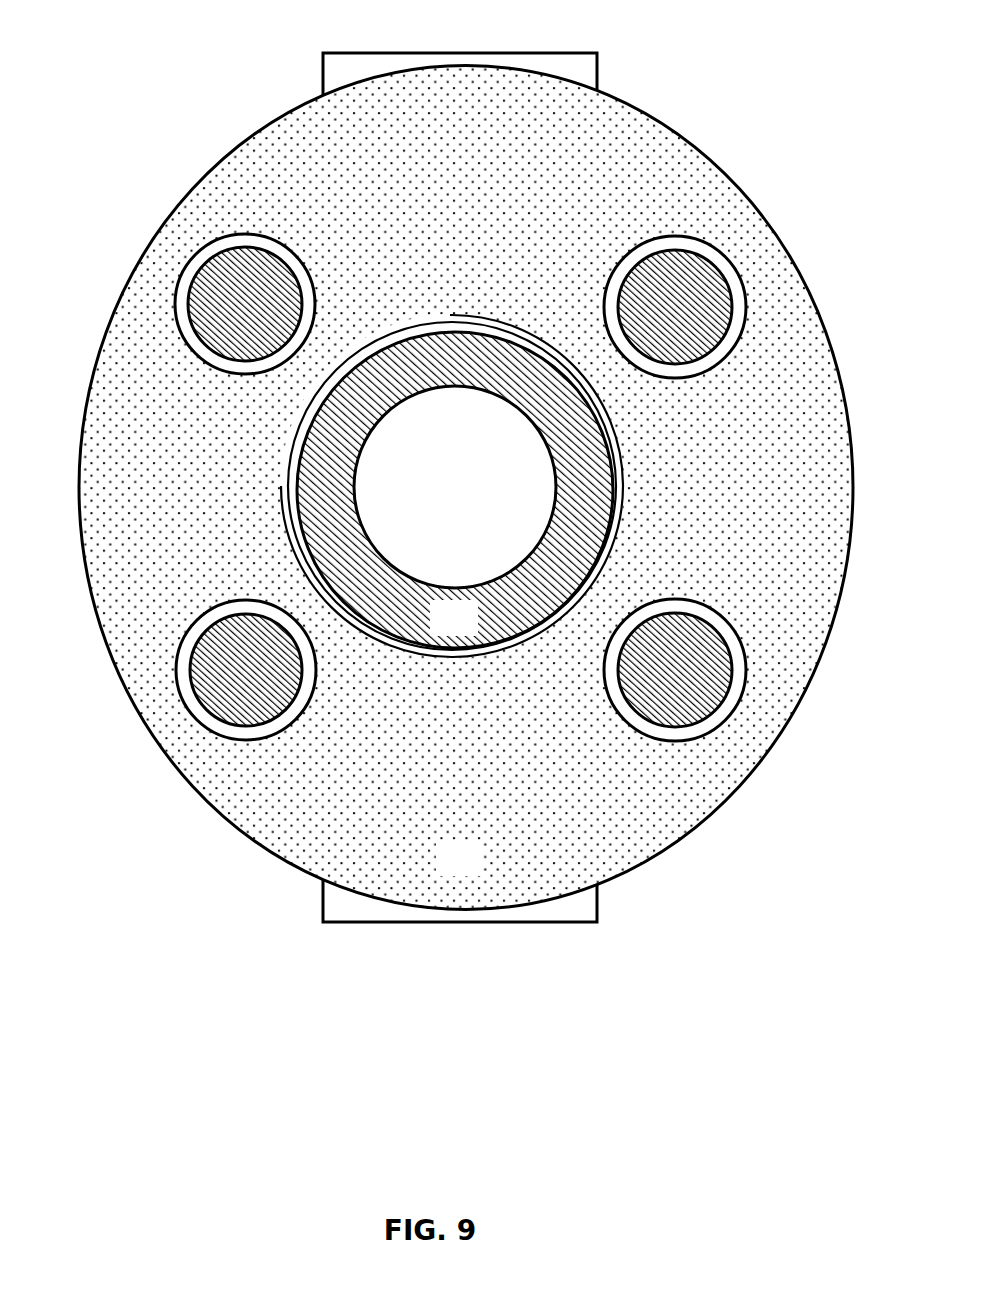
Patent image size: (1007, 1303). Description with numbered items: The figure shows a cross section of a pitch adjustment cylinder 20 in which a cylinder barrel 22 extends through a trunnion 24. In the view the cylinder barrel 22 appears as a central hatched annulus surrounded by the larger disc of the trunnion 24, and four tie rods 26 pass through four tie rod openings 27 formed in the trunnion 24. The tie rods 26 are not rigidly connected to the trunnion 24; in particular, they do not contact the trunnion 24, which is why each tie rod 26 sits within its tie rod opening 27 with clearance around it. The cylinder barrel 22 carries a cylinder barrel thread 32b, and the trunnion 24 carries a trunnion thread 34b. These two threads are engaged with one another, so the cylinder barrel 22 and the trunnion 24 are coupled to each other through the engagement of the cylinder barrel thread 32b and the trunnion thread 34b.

The pitch adjustment cylinder 20 is at (446, 465).
The cylinder barrel 22 is at (439, 632).
The trunnion 24 is at (442, 872).
The tie rod 26 is at (227, 667).
The tie rod opening 27 is at (245, 731).
The cylinder barrel thread 32b is at (298, 443).
The trunnion thread 34b is at (288, 550).